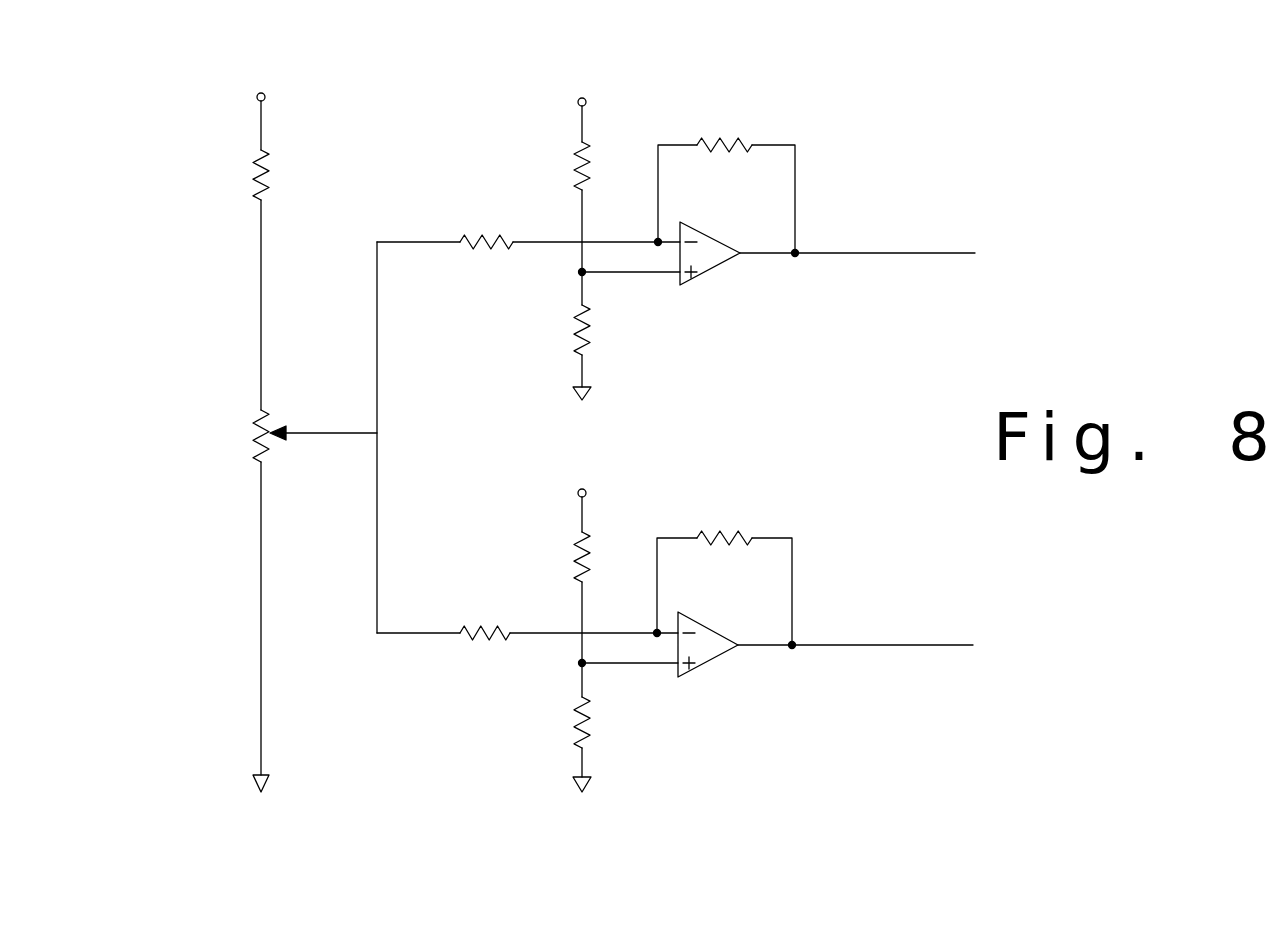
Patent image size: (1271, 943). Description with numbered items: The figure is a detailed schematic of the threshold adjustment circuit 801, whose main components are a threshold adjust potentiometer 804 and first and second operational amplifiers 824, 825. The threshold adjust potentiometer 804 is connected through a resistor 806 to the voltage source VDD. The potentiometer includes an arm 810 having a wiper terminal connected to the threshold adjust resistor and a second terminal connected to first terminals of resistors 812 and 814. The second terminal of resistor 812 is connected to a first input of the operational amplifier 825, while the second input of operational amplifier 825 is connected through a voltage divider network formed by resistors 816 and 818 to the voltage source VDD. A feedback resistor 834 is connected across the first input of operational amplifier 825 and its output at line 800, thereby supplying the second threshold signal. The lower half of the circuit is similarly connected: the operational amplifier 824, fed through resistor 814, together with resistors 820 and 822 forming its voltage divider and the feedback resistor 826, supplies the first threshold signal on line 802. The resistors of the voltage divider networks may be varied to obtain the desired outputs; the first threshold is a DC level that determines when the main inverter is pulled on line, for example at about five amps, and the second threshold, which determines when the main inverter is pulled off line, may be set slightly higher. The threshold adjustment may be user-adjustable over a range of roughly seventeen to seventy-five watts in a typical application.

The output line 800 is at (915, 253).
The threshold adjustment circuit 801 is at (1060, 126).
The line 802 is at (892, 645).
The threshold adjust potentiometer 804 is at (267, 450).
The resistor 806 is at (265, 188).
The arm 810 is at (325, 433).
The resistor 812 is at (487, 234).
The resistor 814 is at (500, 643).
The resistor 816 is at (588, 142).
The resistor 818 is at (588, 344).
The resistor 820 is at (590, 547).
The resistor 822 is at (588, 736).
The operational amplifier 824 is at (735, 650).
The operational amplifier 825 is at (722, 265).
The feedback resistor 826 is at (745, 535).
The feedback resistor 834 is at (742, 143).